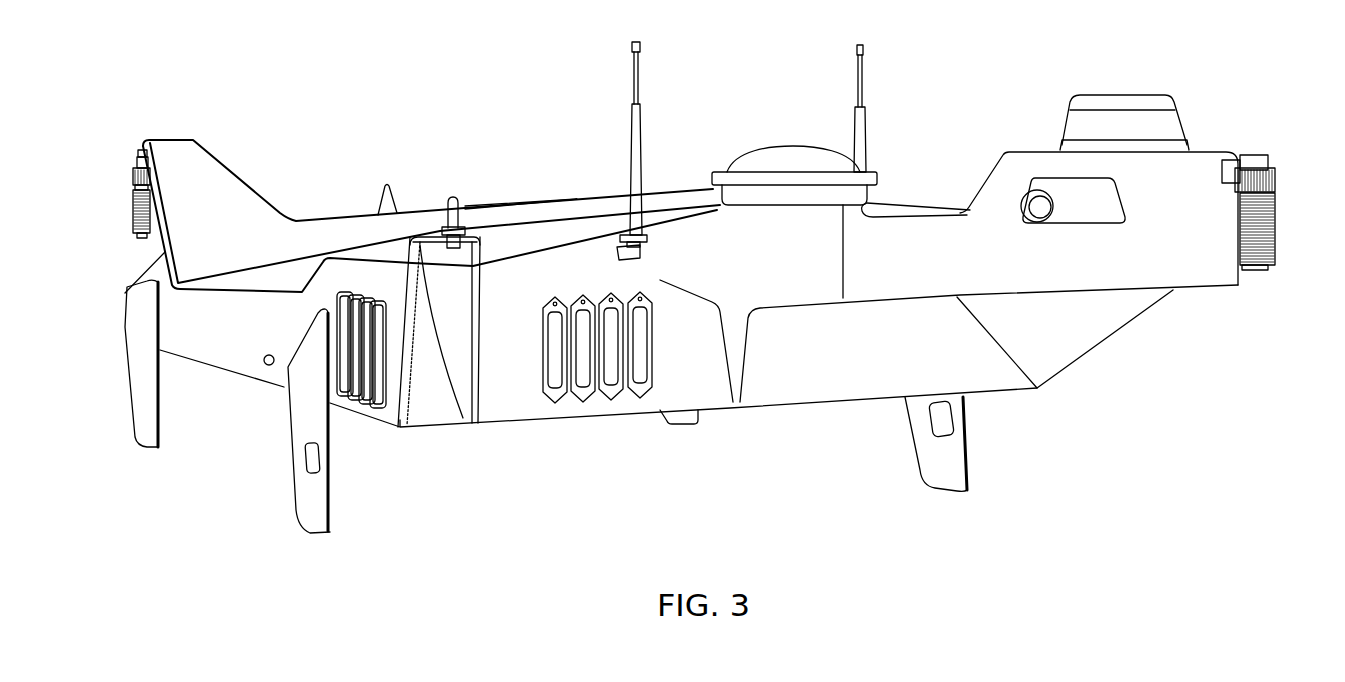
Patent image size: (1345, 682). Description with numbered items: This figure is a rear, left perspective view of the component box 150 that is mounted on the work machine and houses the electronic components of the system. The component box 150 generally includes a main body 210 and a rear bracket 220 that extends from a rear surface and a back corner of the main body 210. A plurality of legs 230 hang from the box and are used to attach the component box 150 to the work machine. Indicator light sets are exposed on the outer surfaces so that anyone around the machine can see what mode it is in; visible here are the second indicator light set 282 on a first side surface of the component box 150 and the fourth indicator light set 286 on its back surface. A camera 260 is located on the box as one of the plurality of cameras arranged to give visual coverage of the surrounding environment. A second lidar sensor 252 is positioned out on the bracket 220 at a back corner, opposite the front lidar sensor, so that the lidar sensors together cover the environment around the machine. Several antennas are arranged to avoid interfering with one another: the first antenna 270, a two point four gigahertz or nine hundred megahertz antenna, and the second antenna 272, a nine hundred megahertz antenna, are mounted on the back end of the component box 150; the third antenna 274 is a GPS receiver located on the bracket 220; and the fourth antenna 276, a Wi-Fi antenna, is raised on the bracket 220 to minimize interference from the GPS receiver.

The component box 150 is at (217, 290).
The main body 210 is at (482, 345).
The rear bracket 220 is at (1198, 262).
The legs 230 is at (130, 383).
The second lidar sensor 252 is at (1276, 193).
The camera 260 is at (262, 367).
The first antenna 270 is at (640, 78).
The second antenna 272 is at (864, 80).
The third antenna 274 is at (795, 146).
The fourth antenna 276 is at (1127, 93).
The second indicator light set 282 is at (378, 388).
The fourth indicator light set 286 is at (615, 377).